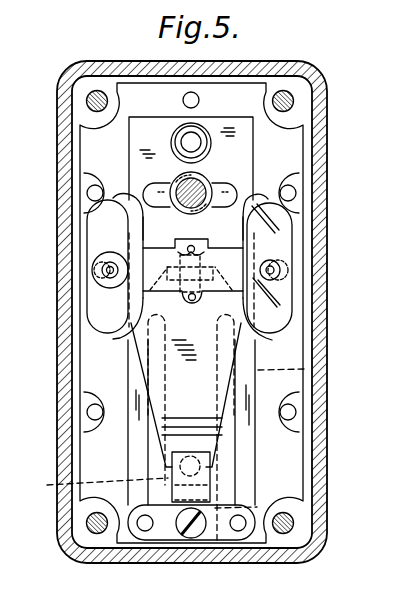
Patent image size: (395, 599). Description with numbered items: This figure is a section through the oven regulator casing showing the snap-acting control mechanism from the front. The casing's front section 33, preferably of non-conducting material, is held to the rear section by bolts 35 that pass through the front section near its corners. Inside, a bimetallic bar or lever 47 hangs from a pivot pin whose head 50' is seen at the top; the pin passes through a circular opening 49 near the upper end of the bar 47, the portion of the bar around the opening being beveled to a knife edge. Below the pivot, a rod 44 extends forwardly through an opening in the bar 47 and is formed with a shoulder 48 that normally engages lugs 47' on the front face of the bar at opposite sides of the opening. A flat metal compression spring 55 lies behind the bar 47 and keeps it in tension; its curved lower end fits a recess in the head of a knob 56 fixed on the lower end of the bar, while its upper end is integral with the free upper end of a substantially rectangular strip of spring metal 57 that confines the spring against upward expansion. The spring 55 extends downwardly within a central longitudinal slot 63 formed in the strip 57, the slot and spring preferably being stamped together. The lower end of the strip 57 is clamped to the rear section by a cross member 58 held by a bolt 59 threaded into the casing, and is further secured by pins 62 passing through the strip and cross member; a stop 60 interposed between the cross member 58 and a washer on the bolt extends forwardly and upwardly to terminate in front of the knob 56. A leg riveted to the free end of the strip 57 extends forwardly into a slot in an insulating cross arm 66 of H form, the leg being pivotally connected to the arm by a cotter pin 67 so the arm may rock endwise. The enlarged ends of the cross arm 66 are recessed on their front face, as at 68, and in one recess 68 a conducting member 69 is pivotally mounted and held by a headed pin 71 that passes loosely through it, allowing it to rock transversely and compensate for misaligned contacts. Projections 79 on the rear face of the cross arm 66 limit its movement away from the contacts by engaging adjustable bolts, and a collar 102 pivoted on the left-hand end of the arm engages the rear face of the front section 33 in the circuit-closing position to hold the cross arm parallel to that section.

The front section 33 is at (318, 92).
The bolts 35 is at (293, 529).
The rod 44 is at (177, 182).
The bimetallic bar 47 is at (129, 428).
The lugs 47' is at (254, 178).
The shoulder 48 is at (188, 193).
The circular opening 49 is at (205, 170).
The head 50' is at (151, 143).
The compression spring 55 is at (316, 368).
The knob 56 is at (137, 492).
The strip of spring metal 57 is at (248, 451).
The cross member 58 is at (162, 530).
The bolt 59 is at (198, 530).
The stop 60 is at (203, 496).
The pins 62 is at (241, 526).
The central longitudinal slot 63 is at (157, 440).
The cross arm 66 is at (143, 252).
The cotter pin 67 is at (208, 243).
The recess 68 is at (108, 309).
The conducting member 69 is at (283, 233).
The headed pin 71 is at (273, 265).
The projections 79 is at (294, 281).
The collar 102 is at (100, 285).